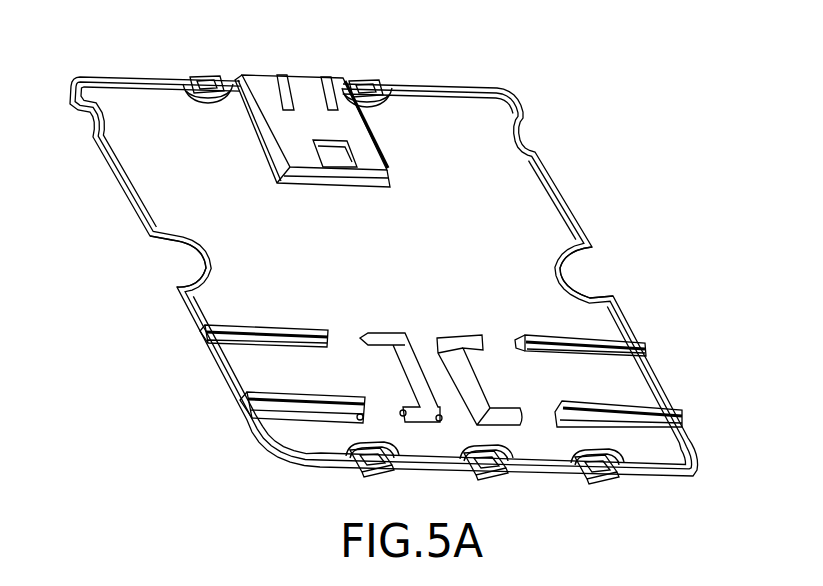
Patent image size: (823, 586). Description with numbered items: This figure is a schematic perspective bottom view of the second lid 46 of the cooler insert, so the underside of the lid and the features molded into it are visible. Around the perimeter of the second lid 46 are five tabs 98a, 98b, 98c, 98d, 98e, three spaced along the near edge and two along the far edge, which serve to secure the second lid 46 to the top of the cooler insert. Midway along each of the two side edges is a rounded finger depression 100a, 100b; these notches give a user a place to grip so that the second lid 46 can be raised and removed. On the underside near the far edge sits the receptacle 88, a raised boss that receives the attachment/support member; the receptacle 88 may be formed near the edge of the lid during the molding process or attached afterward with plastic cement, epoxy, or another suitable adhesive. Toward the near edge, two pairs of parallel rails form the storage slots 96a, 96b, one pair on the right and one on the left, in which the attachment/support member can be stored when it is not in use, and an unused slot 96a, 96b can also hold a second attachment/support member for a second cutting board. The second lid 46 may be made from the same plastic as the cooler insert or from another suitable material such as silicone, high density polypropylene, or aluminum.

The second lid 46 is at (402, 284).
The receptacle 88 is at (378, 145).
The storage slot 96a is at (615, 378).
The storage slot 96b is at (222, 366).
The tab 98a is at (598, 478).
The tab 98b is at (488, 474).
The tab 98c is at (376, 470).
The tab 98d is at (208, 76).
The tab 98e is at (365, 80).
The finger depression 100a is at (583, 270).
The finger depression 100b is at (168, 262).